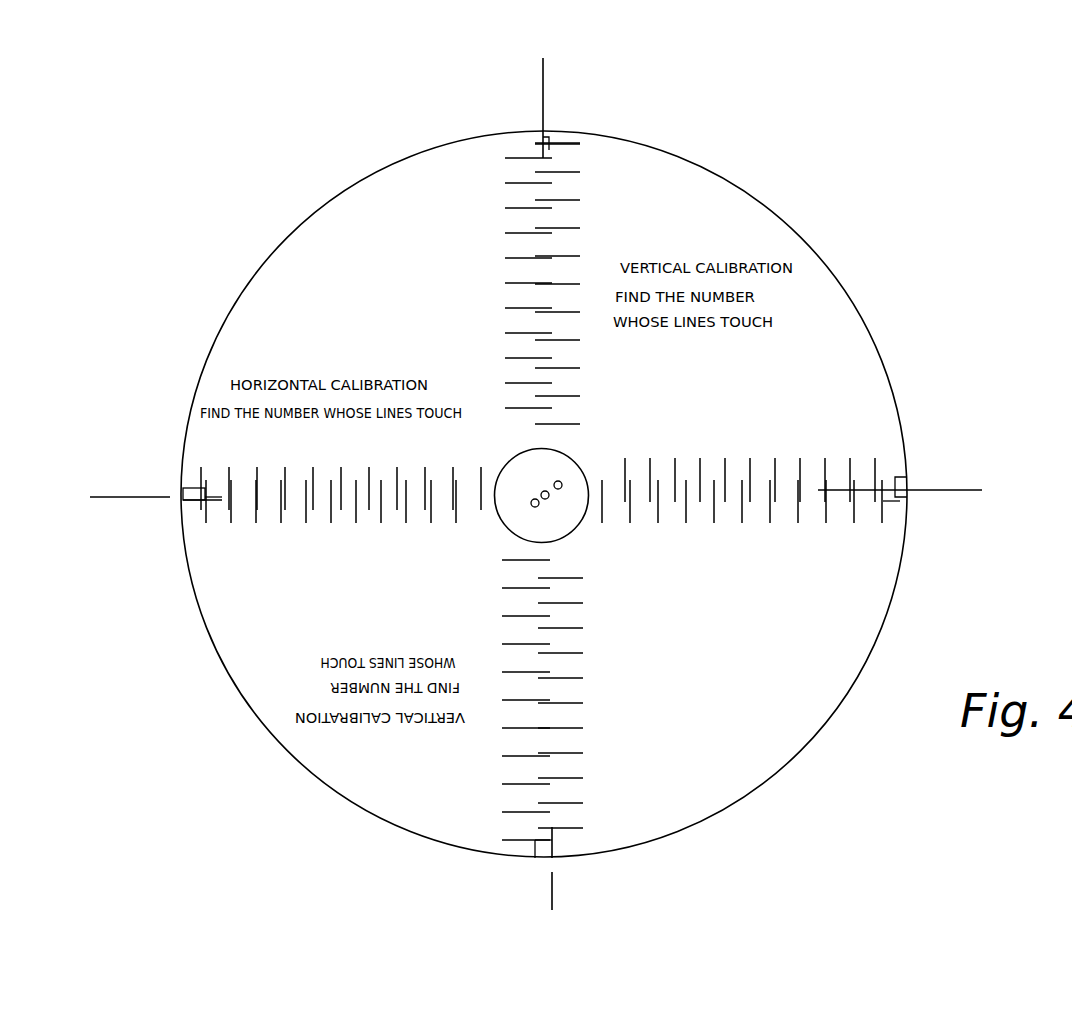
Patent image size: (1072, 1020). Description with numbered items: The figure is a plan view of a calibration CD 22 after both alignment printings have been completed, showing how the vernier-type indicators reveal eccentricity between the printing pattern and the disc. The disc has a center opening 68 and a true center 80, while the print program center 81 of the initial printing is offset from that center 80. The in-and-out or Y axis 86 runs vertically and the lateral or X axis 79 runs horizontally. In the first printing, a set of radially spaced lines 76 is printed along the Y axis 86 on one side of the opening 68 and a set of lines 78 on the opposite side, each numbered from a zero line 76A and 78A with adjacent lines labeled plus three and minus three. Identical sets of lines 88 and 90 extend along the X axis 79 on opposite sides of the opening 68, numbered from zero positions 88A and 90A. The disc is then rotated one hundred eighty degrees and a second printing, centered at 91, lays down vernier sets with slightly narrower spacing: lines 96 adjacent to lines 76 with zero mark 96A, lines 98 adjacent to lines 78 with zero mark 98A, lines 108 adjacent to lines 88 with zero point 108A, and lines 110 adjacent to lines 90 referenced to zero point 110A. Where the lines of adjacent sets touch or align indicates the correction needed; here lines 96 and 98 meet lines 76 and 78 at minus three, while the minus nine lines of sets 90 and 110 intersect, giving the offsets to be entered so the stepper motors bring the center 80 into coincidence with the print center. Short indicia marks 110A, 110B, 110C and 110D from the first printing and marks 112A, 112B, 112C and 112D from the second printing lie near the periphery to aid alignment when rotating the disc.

The calibration CD 22 is at (700, 163).
The Y axis 86 is at (544, 88).
The first set of radially spaced lines 76 is at (523, 275).
The zero line of lines 76 76A is at (607, 280).
The second-printing lines along Y axis 96 is at (470, 228).
The zero mark of lines 96 96A is at (490, 284).
The second printing indicia mark 112A is at (540, 136).
The zero point / indicia mark 110A is at (552, 141).
The set of lines along X axis 90 is at (256, 443).
The zero position of lines 90 90A is at (342, 447).
The additional set of spaced lines 110 is at (265, 543).
The X axis 79 is at (113, 493).
The second printing indicia mark 112D is at (193, 488).
The first printing indicia mark 110D is at (190, 504).
The set of lines along X axis 108 is at (825, 440).
The zero point of lines 108 108A is at (750, 442).
The set of lines along X axis 88 is at (770, 548).
The zero position of lines 88 88A is at (745, 547).
The second printing indicia mark 112B is at (897, 485).
The first printing indicia mark 110B is at (897, 500).
The center of the CD 80 is at (546, 490).
The print program center 81 is at (561, 483).
The center of the printing program for second printing 91 is at (533, 507).
The center opening 68 is at (560, 520).
The set of radially spaced lines 78 is at (478, 756).
The zero line of lines 78 78A is at (492, 702).
The second-printing lines along Y axis 98 is at (611, 733).
The zero mark of lines 98 98A is at (606, 700).
The first printing indicia mark 110C is at (535, 858).
The second printing indicia mark 112C is at (555, 845).